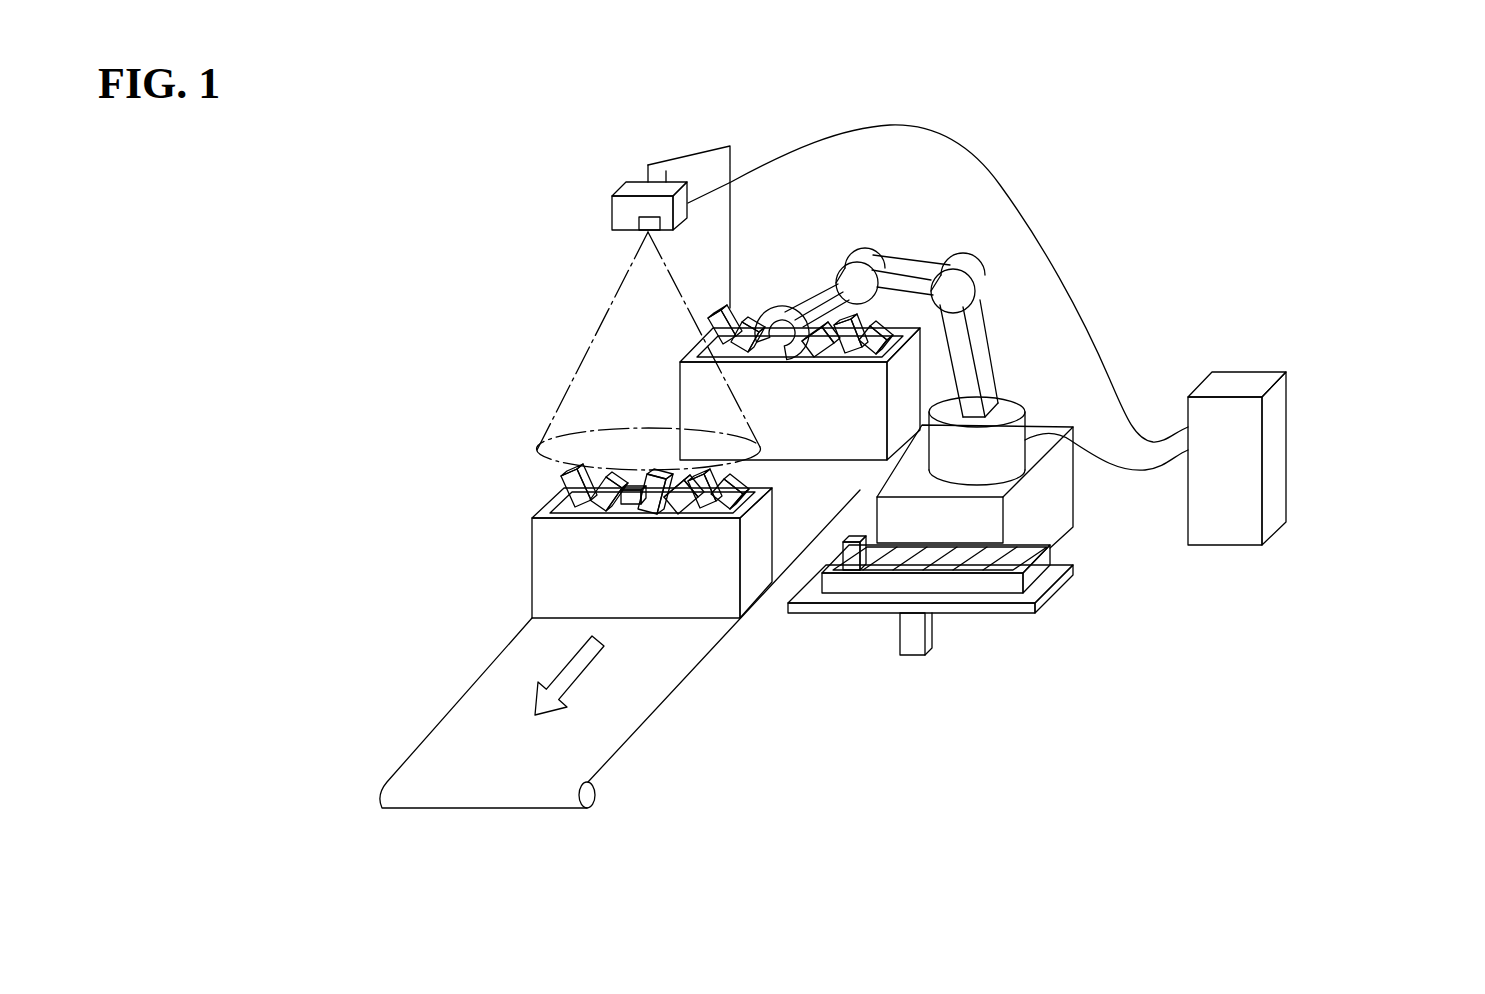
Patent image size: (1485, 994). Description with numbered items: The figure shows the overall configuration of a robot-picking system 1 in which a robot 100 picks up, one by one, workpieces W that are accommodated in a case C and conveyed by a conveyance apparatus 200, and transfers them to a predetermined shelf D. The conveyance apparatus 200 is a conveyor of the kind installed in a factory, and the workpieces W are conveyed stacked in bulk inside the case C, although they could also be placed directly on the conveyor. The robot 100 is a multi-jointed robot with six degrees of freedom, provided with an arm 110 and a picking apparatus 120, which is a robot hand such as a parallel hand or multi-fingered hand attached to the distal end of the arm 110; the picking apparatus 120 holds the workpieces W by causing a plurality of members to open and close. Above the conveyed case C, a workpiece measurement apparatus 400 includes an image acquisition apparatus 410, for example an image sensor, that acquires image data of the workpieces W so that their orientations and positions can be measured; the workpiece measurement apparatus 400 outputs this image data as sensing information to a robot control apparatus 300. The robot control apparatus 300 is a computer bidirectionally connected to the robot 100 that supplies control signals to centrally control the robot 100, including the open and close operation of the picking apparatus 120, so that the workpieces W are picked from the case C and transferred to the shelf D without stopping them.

The robot-picking system 1 is at (1160, 241).
The robot 100 is at (1012, 410).
The arm 110 is at (908, 267).
The picking apparatus 120 is at (785, 310).
The conveyance apparatus 200 is at (638, 728).
The robot control apparatus 300 is at (1287, 445).
The workpiece measurement apparatus 400 is at (665, 185).
The image acquisition apparatus 410 is at (613, 220).
The workpiece W is at (568, 472).
The case C is at (773, 540).
The shelf D is at (1060, 590).